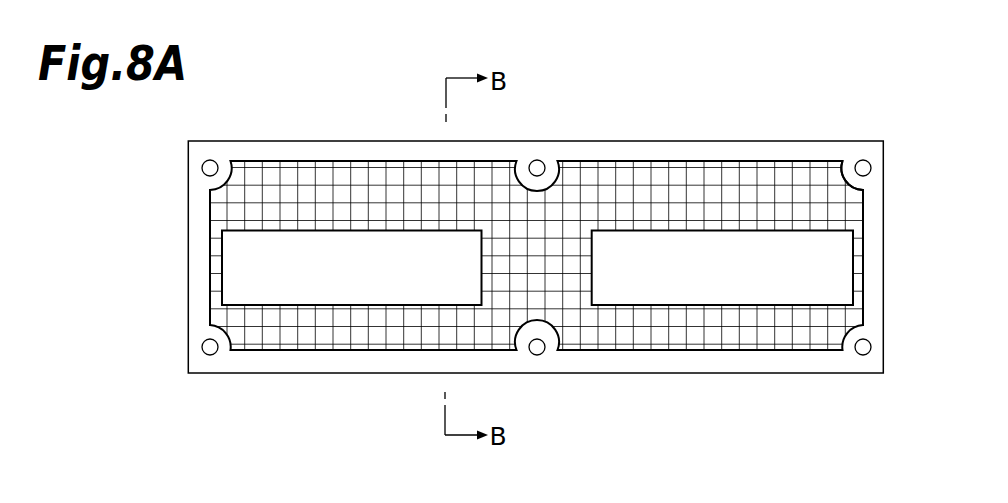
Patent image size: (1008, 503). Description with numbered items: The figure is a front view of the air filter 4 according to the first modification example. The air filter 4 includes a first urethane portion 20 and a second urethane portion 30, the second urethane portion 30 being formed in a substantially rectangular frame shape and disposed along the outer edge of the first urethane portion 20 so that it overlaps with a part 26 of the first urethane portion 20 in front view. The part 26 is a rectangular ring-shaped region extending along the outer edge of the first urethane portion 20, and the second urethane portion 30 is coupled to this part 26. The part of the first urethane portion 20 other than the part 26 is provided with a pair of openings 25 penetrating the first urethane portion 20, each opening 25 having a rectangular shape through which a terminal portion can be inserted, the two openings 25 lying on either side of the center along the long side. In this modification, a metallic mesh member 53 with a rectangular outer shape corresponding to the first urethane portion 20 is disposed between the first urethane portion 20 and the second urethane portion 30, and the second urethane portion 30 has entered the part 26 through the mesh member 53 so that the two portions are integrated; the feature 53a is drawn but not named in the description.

The air filter 4 is at (859, 141).
The first urethane portion 20 is at (624, 193).
The opening 25 is at (357, 305).
The part of the first urethane portion 26 is at (355, 153).
The second urethane portion 30 is at (725, 152).
The mesh member 53 is at (795, 178).
The projection 53a is at (253, 305).